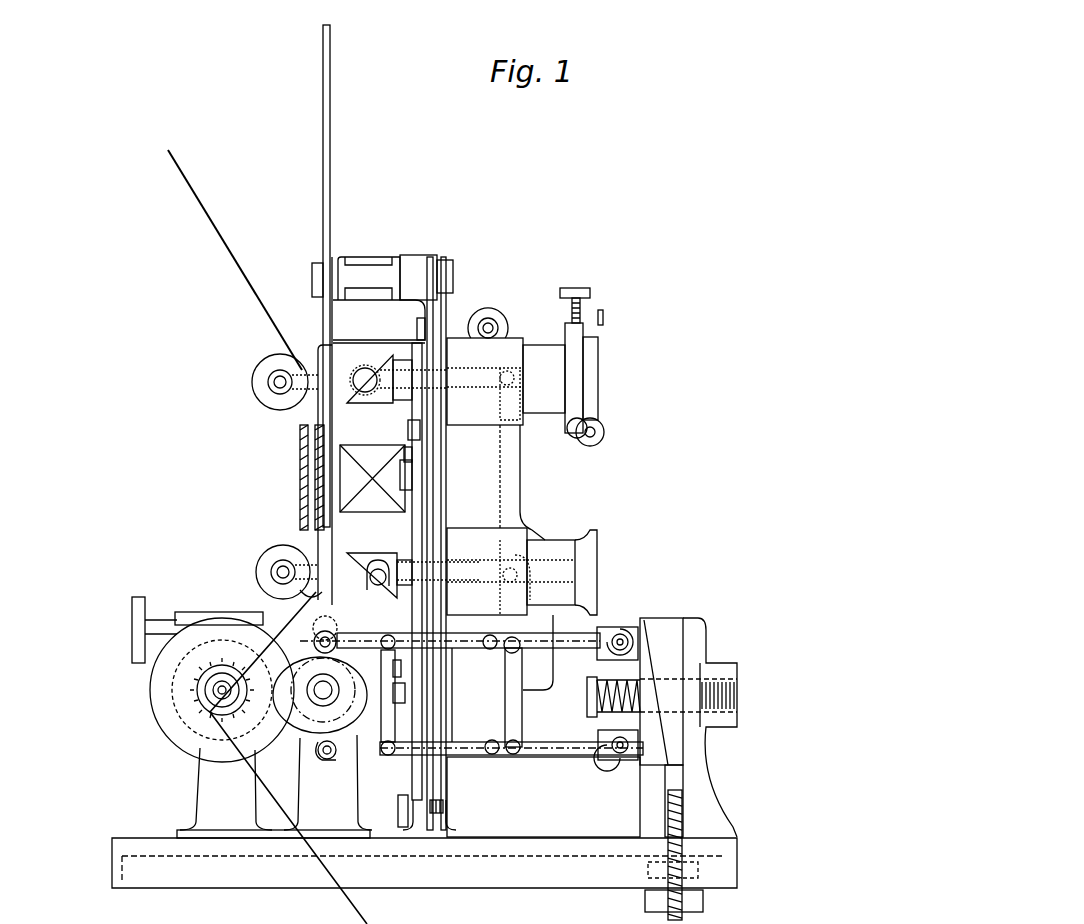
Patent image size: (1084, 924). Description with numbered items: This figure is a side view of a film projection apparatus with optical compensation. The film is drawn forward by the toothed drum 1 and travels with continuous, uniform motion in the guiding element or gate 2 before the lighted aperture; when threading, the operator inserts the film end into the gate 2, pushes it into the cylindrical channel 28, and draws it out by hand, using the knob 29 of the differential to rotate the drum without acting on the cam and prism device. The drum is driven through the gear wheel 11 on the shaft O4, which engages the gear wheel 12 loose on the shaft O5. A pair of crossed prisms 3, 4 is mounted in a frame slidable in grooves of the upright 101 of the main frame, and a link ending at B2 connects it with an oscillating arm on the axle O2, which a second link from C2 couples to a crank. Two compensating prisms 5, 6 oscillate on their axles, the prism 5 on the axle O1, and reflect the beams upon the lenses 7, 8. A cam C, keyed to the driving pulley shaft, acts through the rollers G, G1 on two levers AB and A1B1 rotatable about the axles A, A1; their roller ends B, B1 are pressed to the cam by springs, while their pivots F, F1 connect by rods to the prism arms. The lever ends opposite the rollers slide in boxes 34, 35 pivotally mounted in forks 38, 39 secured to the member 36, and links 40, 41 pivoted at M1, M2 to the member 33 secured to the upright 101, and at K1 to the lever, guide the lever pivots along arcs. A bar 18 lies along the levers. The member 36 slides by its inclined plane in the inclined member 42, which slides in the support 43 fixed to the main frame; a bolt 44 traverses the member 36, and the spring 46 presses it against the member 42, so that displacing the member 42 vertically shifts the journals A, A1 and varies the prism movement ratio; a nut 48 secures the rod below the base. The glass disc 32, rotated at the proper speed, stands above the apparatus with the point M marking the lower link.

The toothed drum 1 is at (220, 707).
The guiding element or gate 2 is at (300, 433).
The crossed prism 3 is at (372, 478).
The crossed prism 4 is at (371, 498).
The compensating prism 5 is at (380, 556).
The compensating prism 6 is at (372, 397).
The lens 7 is at (492, 560).
The lens 8 is at (508, 368).
The upright of the main frame 101 is at (430, 487).
The gear wheel 11 is at (312, 712).
The gear wheel 12 is at (158, 698).
The lever bar 18 is at (450, 639).
The cylindrical channel 28 is at (305, 598).
The knob of the differential 29 is at (137, 617).
The glass disc 32 is at (326, 148).
The member 33 is at (392, 696).
The box 34 is at (597, 733).
The box 35 is at (604, 630).
The member 36 is at (653, 758).
The fork 38 is at (614, 750).
The fork 39 is at (620, 634).
The link 40 is at (452, 747).
The link 41 is at (452, 652).
The inclined member 42 is at (667, 628).
The support 43 is at (692, 651).
The bolt 44 is at (590, 698).
The spring 46 is at (596, 677).
The nut 48 is at (648, 893).
The axle A is at (620, 756).
The axle A1 is at (622, 625).
The lever end B is at (330, 756).
The lever end B1 is at (330, 640).
The link and arm end B2 is at (422, 470).
The cam C is at (356, 720).
The link end C2 is at (392, 672).
The pivot F is at (513, 756).
The pivot F1 is at (506, 651).
The roller G is at (316, 749).
The roller G1 is at (325, 630).
The pivot K1 is at (489, 636).
The pin M is at (491, 755).
The pivot M1 is at (385, 755).
The pivot M2 is at (393, 636).
The axle O1 is at (381, 575).
The axle O2 is at (398, 808).
The shaft O4 is at (322, 688).
The shaft O5 is at (220, 688).